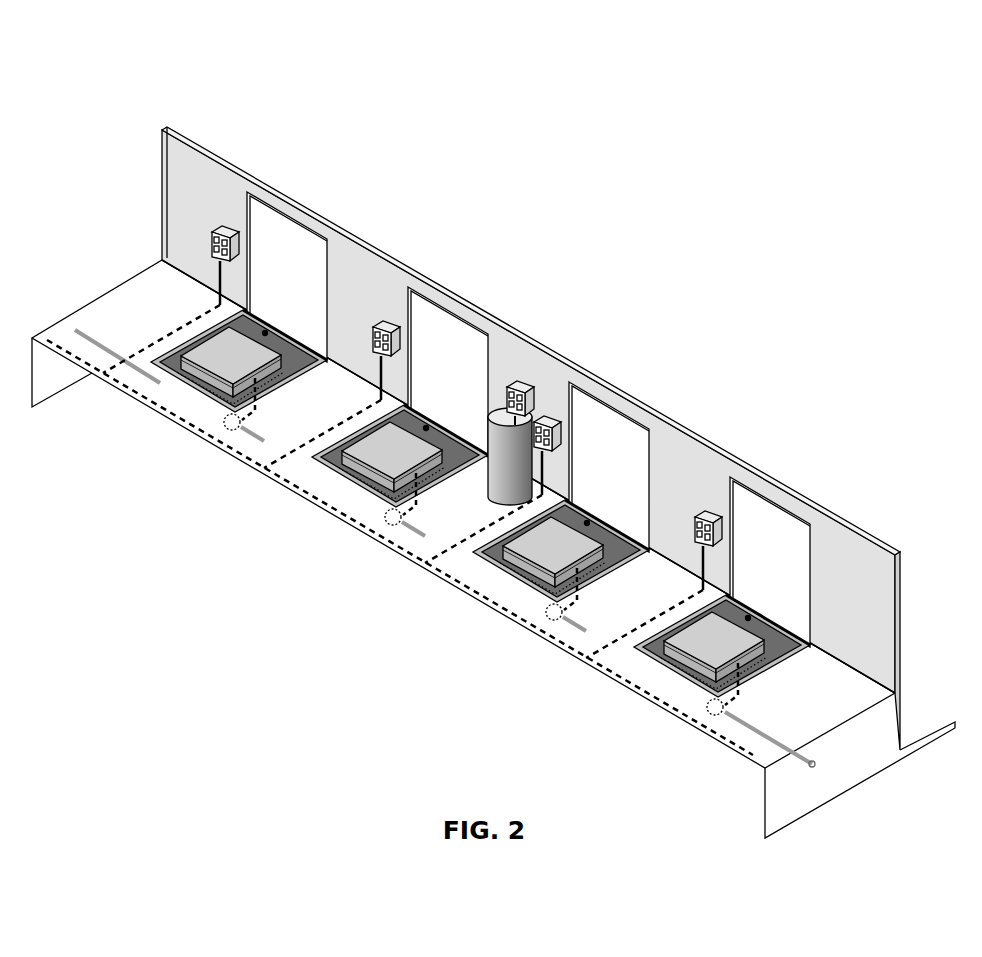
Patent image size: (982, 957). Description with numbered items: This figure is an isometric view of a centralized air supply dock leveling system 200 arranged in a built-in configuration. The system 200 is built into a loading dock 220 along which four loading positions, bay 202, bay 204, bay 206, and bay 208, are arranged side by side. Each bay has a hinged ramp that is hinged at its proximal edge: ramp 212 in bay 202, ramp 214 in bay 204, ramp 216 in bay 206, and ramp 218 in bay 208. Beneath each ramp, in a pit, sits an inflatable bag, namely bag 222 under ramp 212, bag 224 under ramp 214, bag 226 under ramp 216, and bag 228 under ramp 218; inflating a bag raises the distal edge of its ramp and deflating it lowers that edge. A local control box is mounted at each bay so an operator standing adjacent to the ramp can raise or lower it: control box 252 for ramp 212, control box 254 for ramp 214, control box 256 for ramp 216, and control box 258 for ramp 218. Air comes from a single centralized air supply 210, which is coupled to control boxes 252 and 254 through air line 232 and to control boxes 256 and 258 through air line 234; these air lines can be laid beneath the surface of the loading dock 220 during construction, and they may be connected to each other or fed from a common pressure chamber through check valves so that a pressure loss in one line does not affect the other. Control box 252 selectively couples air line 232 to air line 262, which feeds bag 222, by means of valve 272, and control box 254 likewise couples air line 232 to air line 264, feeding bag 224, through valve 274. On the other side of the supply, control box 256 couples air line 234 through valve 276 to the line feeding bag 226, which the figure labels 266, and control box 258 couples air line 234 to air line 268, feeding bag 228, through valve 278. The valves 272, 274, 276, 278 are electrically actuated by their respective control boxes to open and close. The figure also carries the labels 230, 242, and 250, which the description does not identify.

The dock leveling system 200 is at (777, 176).
The bay 202 is at (352, 206).
The bay 204 is at (510, 286).
The bay 206 is at (688, 383).
The bay 208 is at (850, 482).
The centralized air supply 210 is at (493, 422).
The hinged ramp 212 is at (265, 331).
The hinged ramp 214 is at (426, 426).
The hinged ramp 216 is at (587, 521).
The hinged ramp 218 is at (748, 616).
The loading dock 220 is at (824, 698).
The inflatable bag 222 is at (243, 362).
The inflatable bag 224 is at (404, 457).
The inflatable bag 226 is at (566, 552).
The inflatable bag 228 is at (729, 647).
The wall 230 is at (902, 583).
The air line 232 is at (102, 342).
The air line 234 is at (810, 770).
The cable 242 is at (160, 337).
The column controller 250 is at (517, 386).
The local control box 252 is at (240, 247).
The local control box 254 is at (401, 340).
The local control box 256 is at (562, 436).
The local control box 258 is at (723, 531).
The air line 262 is at (252, 417).
The air line 264 is at (421, 508).
The third connection 266 is at (578, 606).
The air line 268 is at (744, 698).
The valve 272 is at (232, 432).
The valve 274 is at (393, 527).
The valve 276 is at (554, 622).
The valve 278 is at (716, 716).